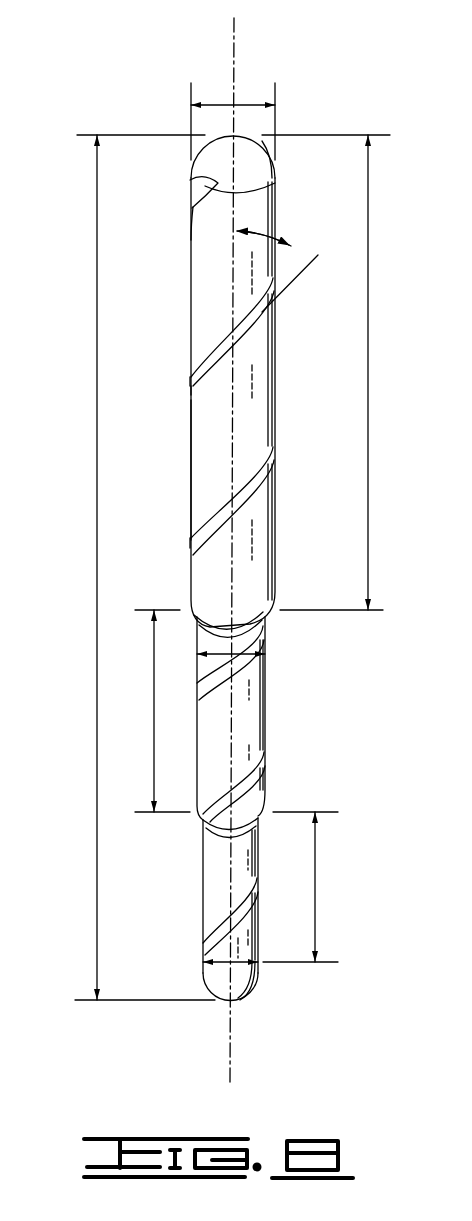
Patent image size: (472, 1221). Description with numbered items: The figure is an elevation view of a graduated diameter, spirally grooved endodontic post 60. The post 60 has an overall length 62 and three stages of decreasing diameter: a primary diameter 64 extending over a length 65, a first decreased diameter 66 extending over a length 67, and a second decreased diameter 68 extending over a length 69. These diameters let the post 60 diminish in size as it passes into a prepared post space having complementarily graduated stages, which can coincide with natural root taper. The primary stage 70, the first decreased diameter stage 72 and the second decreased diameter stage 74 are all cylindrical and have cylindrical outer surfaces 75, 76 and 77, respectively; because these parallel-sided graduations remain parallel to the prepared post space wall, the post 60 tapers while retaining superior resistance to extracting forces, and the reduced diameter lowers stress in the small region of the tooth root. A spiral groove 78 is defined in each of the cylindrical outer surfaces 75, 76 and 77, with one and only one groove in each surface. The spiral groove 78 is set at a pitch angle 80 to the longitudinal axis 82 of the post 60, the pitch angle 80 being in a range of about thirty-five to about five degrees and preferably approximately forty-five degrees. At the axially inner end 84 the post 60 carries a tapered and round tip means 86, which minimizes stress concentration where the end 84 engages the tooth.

The graduated diameter, spirally grooved endodontic post 60 is at (175, 240).
The overall length 62 is at (95, 456).
The primary diameter 64 is at (244, 103).
The length of primary diameter 65 is at (370, 364).
The first decreased diameter 66 is at (262, 655).
The length of first decreased diameter 67 is at (152, 708).
The second decreased diameter 68 is at (218, 962).
The length of second decreased diameter 69 is at (318, 888).
The primary stage 70 is at (252, 356).
The first decreased diameter stage 72 is at (247, 716).
The second decreased diameter stage 74 is at (217, 886).
The cylindrical outer surface 75 is at (190, 430).
The cylindrical outer surface 76 is at (268, 726).
The cylindrical outer surface 77 is at (200, 860).
The spiral groove 78 is at (247, 487).
The pitch angle 80 is at (290, 246).
The longitudinal axis 82 is at (232, 27).
The axially inner end 84 is at (234, 1000).
The tapered and round tip means 86 is at (240, 978).